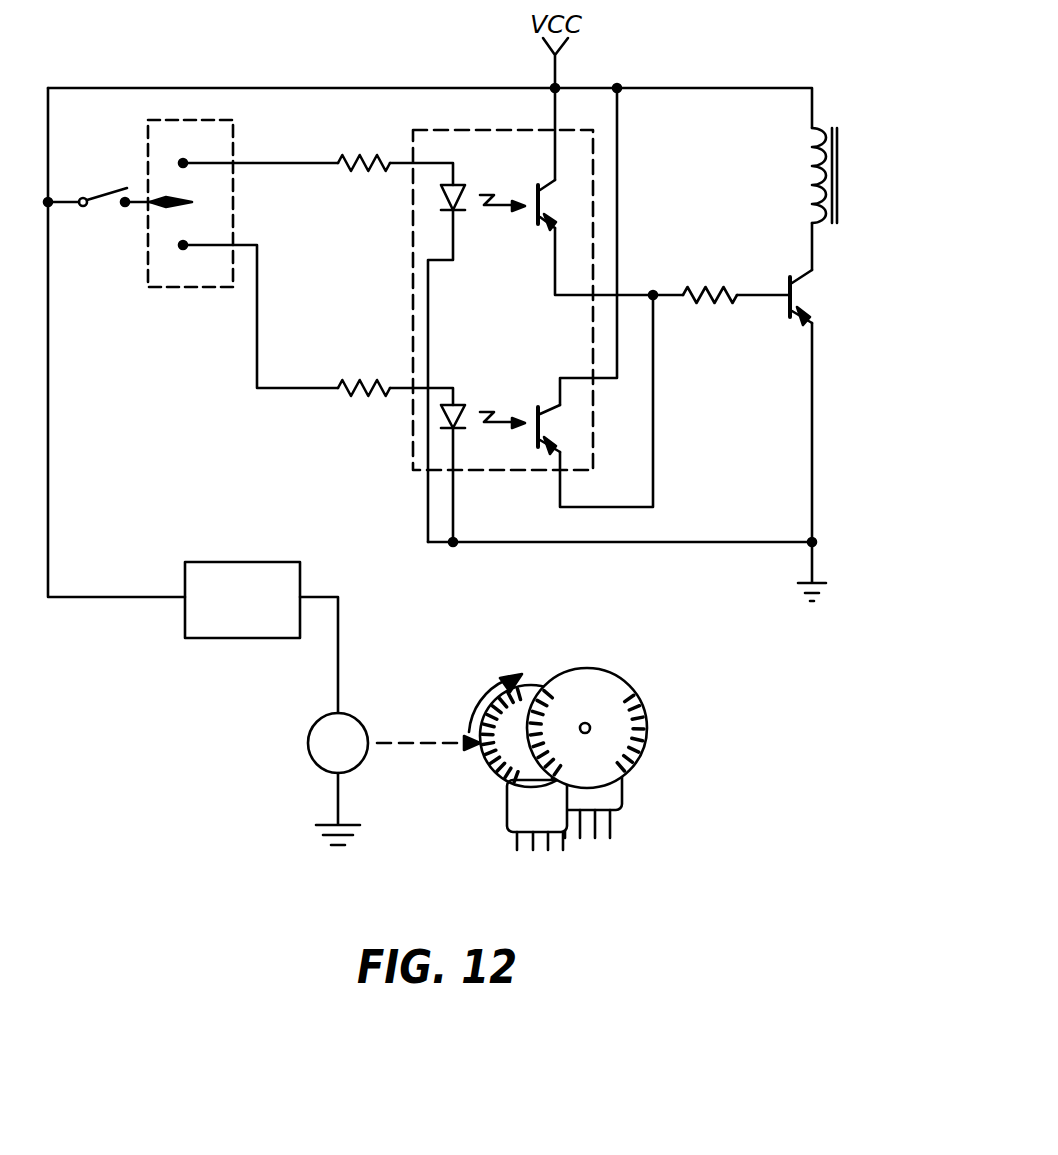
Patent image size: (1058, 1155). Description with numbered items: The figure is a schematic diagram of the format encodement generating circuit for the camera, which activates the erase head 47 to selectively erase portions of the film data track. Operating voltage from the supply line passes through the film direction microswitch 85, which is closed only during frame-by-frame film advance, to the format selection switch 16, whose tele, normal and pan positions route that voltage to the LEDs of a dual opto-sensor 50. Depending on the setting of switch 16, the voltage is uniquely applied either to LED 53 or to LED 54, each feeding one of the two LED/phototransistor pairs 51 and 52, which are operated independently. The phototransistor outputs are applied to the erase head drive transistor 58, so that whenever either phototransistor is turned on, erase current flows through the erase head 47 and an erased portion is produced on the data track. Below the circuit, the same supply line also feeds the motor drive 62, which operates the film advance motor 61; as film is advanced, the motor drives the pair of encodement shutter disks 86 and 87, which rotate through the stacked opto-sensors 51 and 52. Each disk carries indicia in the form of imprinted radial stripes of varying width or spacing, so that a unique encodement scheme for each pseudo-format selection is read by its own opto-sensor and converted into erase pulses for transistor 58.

The format selection switch 16 is at (207, 120).
The film direction microswitch 85 is at (103, 190).
The dual opto-sensor 50 is at (465, 130).
The LED 53 is at (445, 196).
The LED 54 is at (445, 410).
The LED/phototransistor pair 51 is at (515, 258).
The LED/phototransistor pair 52 is at (516, 398).
The erase head 47 is at (838, 160).
The erase head drive transistor 58 is at (815, 298).
The motor drive 62 is at (240, 562).
The film advance motor 61 is at (357, 730).
The encodement shutter disk 87 is at (530, 690).
The encodement shutter disk 86 is at (618, 683).